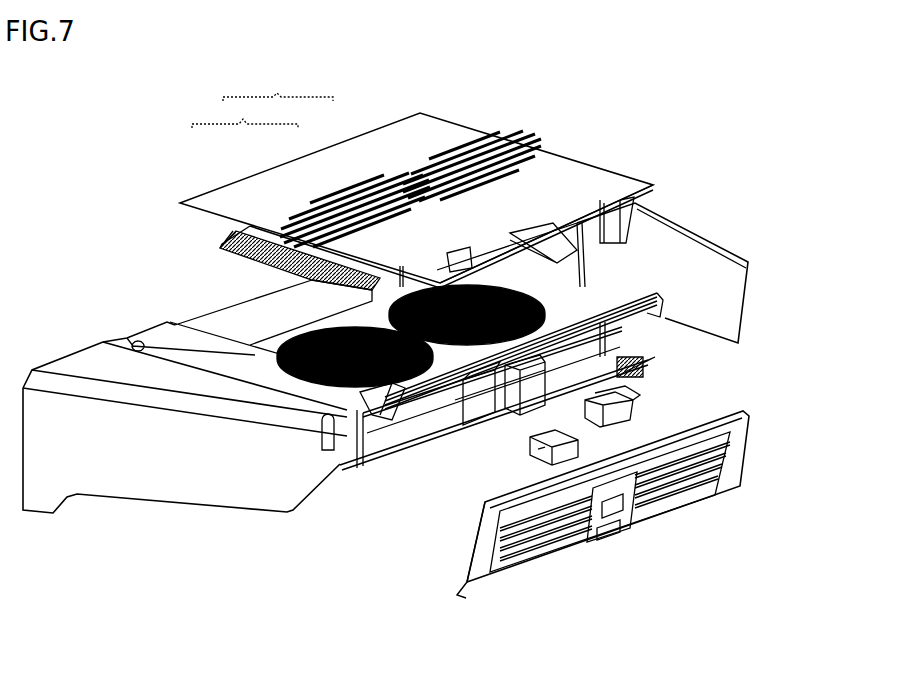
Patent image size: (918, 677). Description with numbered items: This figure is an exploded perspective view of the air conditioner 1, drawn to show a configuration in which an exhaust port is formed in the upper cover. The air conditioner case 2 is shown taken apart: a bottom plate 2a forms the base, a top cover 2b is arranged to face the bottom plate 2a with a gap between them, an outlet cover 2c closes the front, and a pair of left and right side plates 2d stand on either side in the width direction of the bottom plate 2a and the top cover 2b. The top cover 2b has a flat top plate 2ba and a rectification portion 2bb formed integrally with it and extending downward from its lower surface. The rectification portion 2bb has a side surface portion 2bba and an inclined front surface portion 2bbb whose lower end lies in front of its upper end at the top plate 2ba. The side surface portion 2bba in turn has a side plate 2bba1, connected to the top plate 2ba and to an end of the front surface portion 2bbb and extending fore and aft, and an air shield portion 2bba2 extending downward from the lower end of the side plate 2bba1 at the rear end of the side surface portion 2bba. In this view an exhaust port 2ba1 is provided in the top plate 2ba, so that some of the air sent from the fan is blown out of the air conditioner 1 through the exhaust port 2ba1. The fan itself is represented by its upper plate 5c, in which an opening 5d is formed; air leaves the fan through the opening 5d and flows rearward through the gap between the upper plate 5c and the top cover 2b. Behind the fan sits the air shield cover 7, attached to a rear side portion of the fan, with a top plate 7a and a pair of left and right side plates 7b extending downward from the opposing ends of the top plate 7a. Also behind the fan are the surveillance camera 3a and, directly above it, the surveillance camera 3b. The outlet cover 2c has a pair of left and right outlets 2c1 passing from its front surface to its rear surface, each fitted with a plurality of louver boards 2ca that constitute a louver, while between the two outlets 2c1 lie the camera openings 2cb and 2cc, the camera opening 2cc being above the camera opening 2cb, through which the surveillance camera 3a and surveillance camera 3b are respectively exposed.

The air conditioner 1 is at (704, 178).
The air conditioner case 2 is at (563, 161).
The bottom plate 2a is at (383, 472).
The top cover 2b is at (278, 85).
The top plate 2ba is at (303, 178).
The exhaust port 2ba1 is at (367, 185).
The rectification portion 2bb is at (245, 111).
The side surface portion 2bba is at (287, 250).
The side plate 2bba1 is at (310, 280).
The air shield portion 2bba2 is at (330, 315).
The front surface portion 2bbb is at (232, 227).
The outlet cover 2c is at (735, 463).
The outlets 2c1 is at (758, 440).
The louver boards 2ca is at (523, 550).
The camera opening 2cb is at (604, 537).
The camera opening 2cc is at (643, 547).
The side plates 2d is at (187, 475).
The surveillance camera 3a is at (546, 455).
The surveillance camera 3b is at (637, 410).
The upper plate 5c is at (352, 388).
The opening 5d is at (310, 368).
The air shield cover 7 is at (477, 410).
The top plate 7a is at (452, 397).
The side plates 7b is at (488, 407).